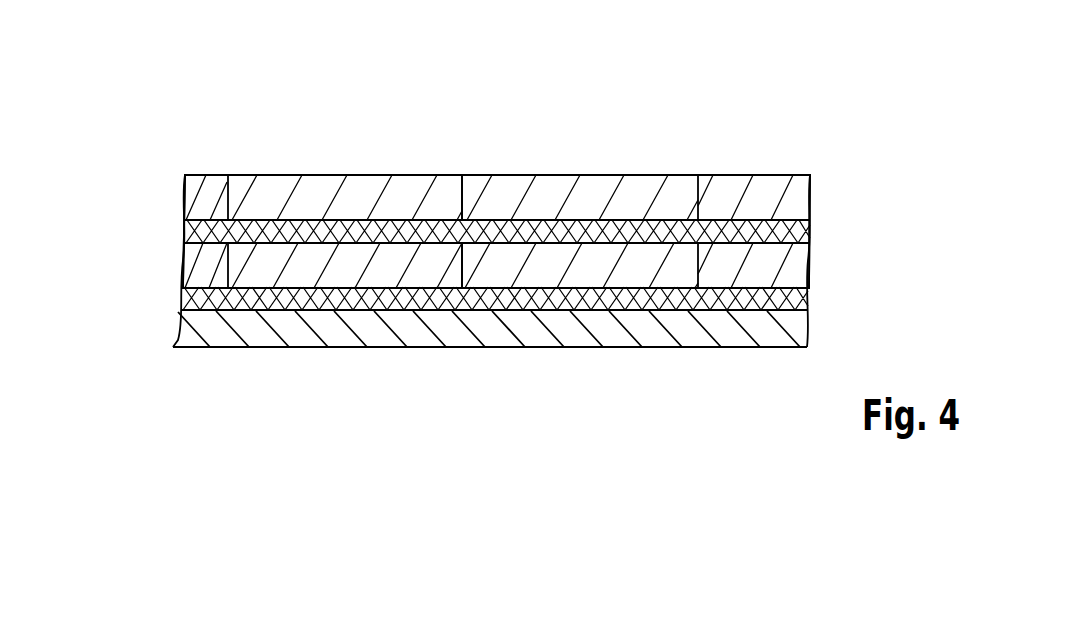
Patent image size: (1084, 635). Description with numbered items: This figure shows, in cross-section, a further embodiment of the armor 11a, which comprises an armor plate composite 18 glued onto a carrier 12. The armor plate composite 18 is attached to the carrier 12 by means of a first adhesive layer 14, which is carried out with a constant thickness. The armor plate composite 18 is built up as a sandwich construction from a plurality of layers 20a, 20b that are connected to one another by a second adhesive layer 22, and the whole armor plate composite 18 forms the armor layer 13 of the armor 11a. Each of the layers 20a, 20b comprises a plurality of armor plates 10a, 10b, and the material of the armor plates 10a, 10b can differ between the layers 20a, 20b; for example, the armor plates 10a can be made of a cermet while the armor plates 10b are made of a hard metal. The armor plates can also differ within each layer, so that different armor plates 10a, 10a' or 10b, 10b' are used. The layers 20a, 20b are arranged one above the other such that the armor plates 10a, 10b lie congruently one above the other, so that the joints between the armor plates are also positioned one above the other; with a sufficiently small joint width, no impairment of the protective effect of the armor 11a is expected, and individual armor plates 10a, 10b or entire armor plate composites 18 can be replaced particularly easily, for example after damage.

The armor 11a is at (826, 82).
The layer 20b is at (832, 184).
The second adhesive layer 22 is at (832, 225).
The layer 20a is at (832, 265).
The first adhesive layer 14 is at (432, 311).
The carrier 12 is at (303, 338).
The armor layer 13 is at (162, 180).
The armor plate composite 18 is at (162, 180).
The armor plate 10a is at (345, 196).
The armor plate 10b is at (345, 162).
The armor plate 10a' is at (580, 196).
The armor plate 10b' is at (580, 162).